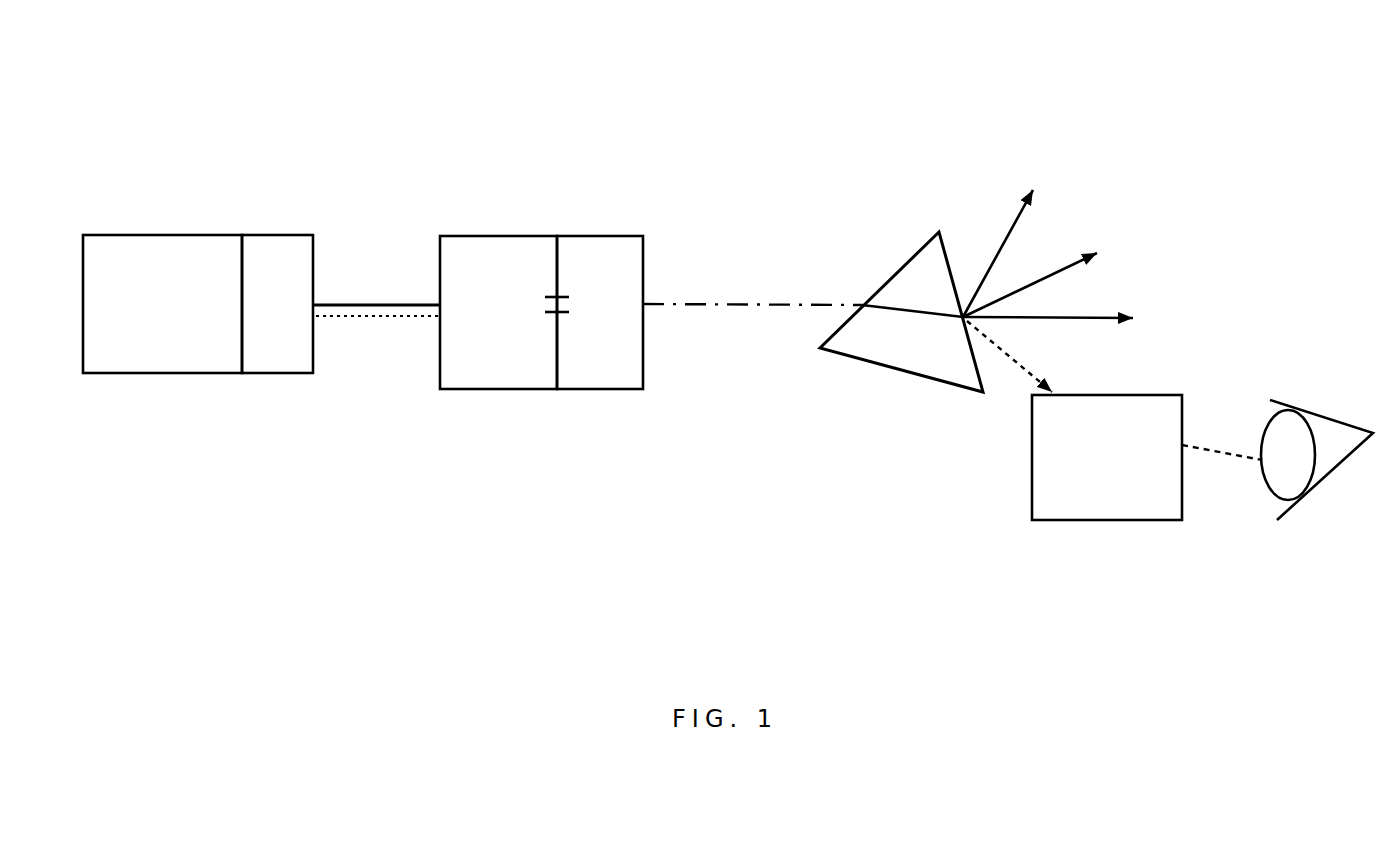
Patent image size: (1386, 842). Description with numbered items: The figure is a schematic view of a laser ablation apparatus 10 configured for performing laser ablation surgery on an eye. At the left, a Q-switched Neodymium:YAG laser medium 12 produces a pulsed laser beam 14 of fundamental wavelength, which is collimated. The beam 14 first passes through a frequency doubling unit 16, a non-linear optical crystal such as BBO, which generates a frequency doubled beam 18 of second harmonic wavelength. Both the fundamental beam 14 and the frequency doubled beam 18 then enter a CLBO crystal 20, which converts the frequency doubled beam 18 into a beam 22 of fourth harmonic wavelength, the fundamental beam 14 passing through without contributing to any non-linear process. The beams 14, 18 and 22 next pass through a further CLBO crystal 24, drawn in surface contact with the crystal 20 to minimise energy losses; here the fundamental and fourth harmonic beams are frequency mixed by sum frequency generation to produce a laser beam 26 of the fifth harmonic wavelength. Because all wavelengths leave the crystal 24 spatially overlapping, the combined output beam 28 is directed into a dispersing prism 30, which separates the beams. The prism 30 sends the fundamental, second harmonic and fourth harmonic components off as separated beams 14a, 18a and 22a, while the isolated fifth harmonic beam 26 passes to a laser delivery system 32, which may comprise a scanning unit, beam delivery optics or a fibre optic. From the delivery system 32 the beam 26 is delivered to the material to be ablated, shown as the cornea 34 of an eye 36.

The laser ablation apparatus 10 is at (715, 115).
The Neodymium:YAG laser medium 12 is at (135, 373).
The pulsed laser beam 14 is at (400, 302).
The frequency doubling unit 16 is at (267, 373).
The frequency doubled beam 18 is at (360, 318).
The CLBO crystal 20 is at (502, 389).
The beam of fourth harmonic wavelength 22 is at (552, 292).
The CLBO crystal 24 is at (612, 389).
The laser beam of fifth harmonic wavelength 26 is at (1022, 368).
The combined output beam 28 is at (780, 303).
The dispersing prism 30 is at (863, 362).
The laser delivery system 32 is at (1055, 520).
The cornea 34 is at (1267, 492).
The eye 36 is at (1323, 480).
The separated fundamental beam 14a is at (1013, 220).
The separated second harmonic beam 18a is at (1067, 262).
The separated fourth harmonic beam 22a is at (1105, 315).